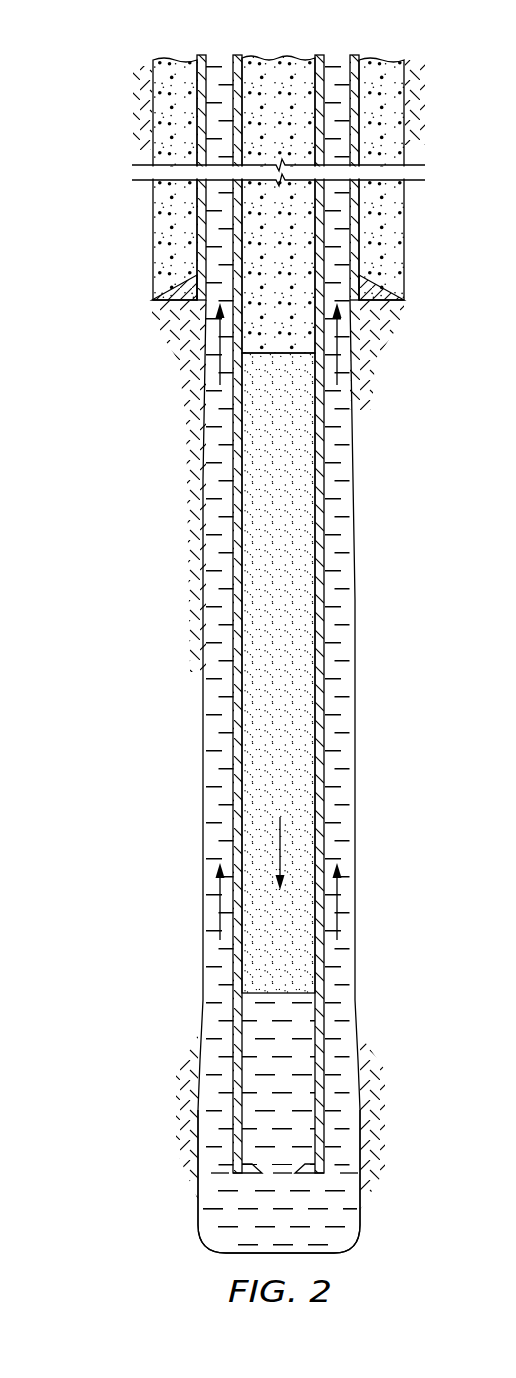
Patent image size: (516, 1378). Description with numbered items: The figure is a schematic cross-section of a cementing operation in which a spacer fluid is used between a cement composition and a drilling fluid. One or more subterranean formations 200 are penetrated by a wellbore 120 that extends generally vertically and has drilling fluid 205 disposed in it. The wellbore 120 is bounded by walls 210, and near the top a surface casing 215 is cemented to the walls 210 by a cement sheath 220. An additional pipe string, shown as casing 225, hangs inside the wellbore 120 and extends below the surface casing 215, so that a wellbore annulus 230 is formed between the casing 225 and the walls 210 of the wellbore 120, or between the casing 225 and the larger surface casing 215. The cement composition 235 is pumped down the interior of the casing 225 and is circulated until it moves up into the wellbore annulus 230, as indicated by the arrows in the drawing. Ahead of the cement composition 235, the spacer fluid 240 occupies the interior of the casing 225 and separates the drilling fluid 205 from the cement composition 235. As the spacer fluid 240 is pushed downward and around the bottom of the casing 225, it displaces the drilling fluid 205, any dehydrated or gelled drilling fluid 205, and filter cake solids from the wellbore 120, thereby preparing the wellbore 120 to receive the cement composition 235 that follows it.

The wellbore 120 is at (355, 508).
The subterranean formations 200 is at (151, 627).
The drilling fluid 205 is at (216, 781).
The walls 210 is at (154, 282).
The surface casing 215 is at (197, 78).
The cement sheath 220 is at (178, 255).
The casing 225 is at (233, 716).
The wellbore annulus 230 is at (215, 736).
The cement composition 235 is at (283, 78).
The spacer fluid 240 is at (288, 440).